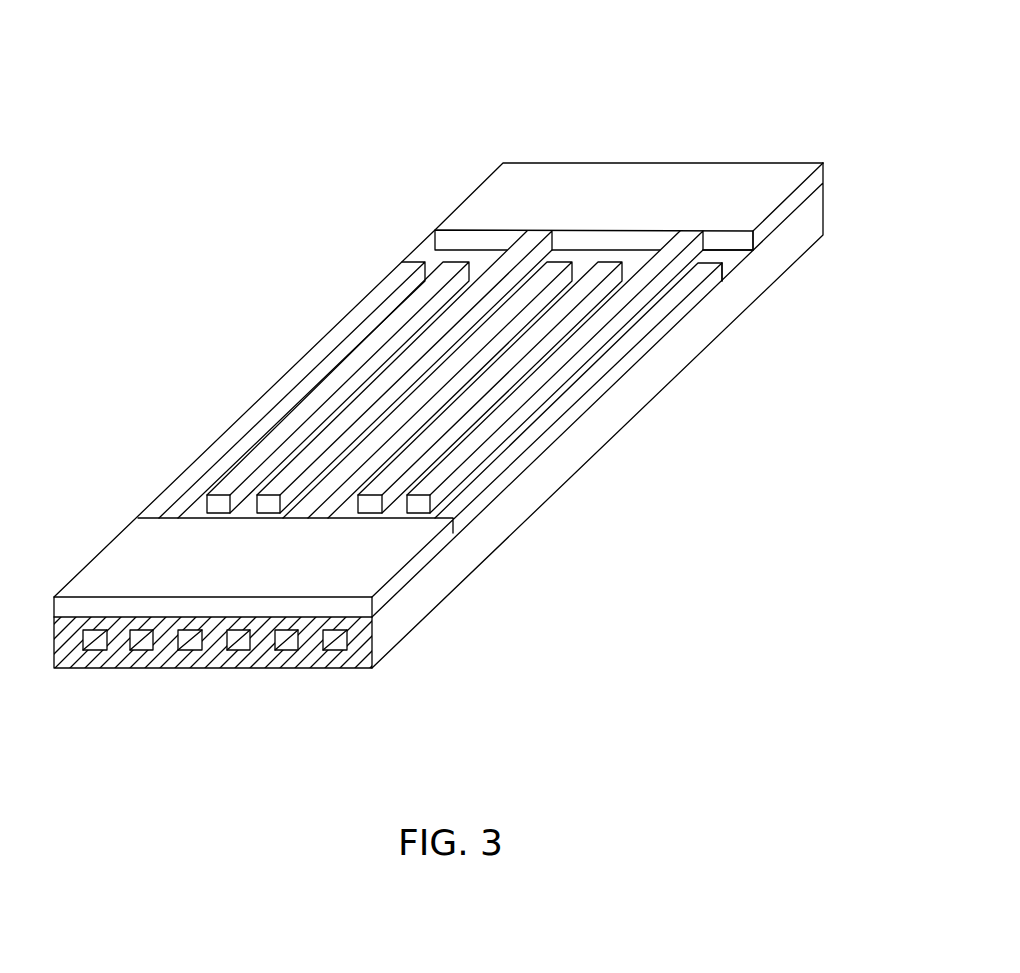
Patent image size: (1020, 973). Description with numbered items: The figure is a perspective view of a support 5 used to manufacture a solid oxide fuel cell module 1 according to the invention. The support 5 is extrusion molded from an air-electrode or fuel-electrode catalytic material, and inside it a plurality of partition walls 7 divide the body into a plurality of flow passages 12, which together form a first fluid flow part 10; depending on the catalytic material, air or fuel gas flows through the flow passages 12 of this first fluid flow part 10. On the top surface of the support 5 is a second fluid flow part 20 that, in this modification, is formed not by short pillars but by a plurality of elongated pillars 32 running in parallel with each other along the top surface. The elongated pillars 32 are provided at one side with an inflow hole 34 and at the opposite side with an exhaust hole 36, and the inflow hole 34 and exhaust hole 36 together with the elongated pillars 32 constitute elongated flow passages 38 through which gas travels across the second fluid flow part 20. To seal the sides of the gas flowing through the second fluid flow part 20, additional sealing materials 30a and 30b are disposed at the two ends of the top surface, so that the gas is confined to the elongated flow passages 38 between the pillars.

The solid oxide fuel cell module 1 is at (419, 439).
The support 5 is at (530, 497).
The partition walls 7 is at (150, 635).
The first fluid flow part 10 is at (215, 645).
The flow passages 12 is at (217, 647).
The second fluid flow part 20 is at (441, 383).
The sealing material 30a is at (720, 185).
The sealing material 30b is at (382, 563).
The elongated pillars 32 is at (395, 373).
The inflow hole 34 is at (435, 265).
The exhaust hole 36 is at (728, 265).
The elongated flow passages 38 is at (613, 345).